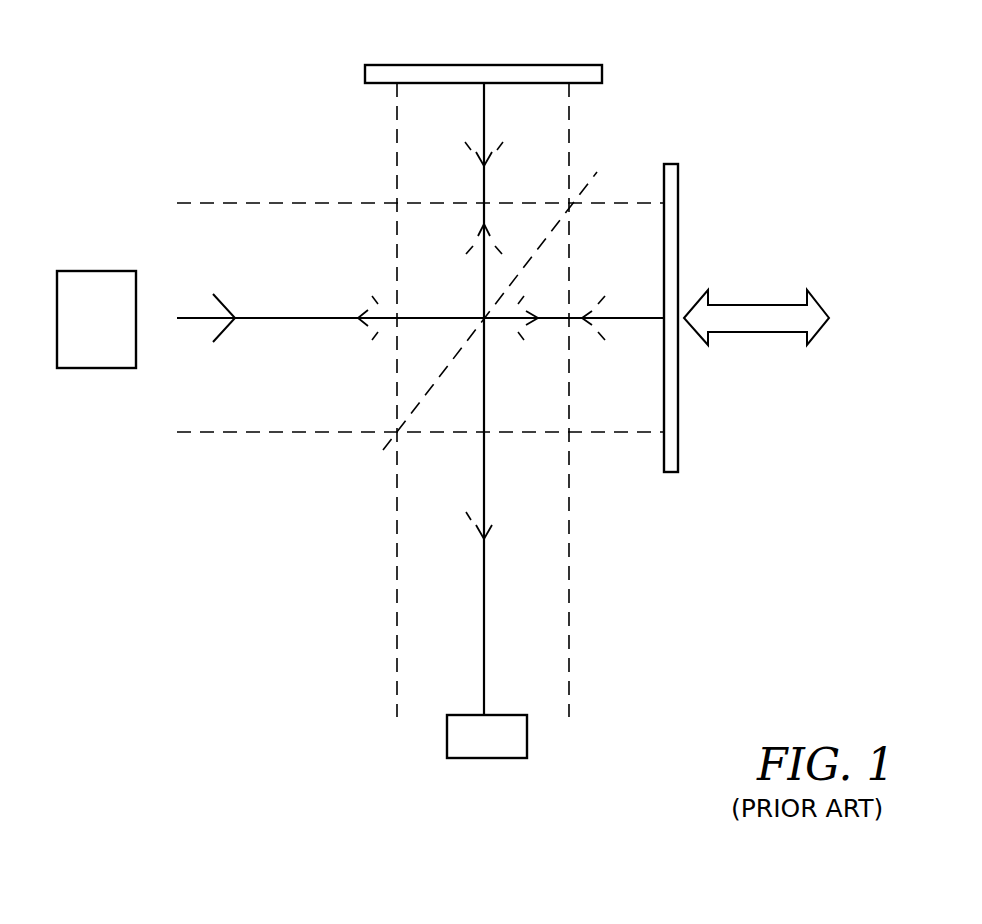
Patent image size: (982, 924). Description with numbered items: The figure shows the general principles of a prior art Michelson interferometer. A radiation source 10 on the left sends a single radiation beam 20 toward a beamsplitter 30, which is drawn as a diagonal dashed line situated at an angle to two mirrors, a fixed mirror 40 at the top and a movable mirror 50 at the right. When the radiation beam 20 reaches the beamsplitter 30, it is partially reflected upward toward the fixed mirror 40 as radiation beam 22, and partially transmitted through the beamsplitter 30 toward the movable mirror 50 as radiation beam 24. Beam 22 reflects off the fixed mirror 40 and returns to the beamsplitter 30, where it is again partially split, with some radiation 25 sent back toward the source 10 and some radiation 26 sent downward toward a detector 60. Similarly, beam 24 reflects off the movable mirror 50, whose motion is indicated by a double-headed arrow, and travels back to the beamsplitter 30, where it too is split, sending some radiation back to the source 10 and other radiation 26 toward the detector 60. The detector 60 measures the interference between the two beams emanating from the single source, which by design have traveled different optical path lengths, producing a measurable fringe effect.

The radiation source 10 is at (78, 271).
The radiation beam 20 is at (215, 303).
The radiation beam 22 is at (485, 130).
The radiation beam 24 is at (525, 299).
The radiation 25 is at (368, 308).
The radiation 26 is at (506, 512).
The beamsplitter 30 is at (374, 472).
The fixed mirror 40 is at (385, 72).
The movable mirror 50 is at (678, 186).
The detector 60 is at (527, 740).